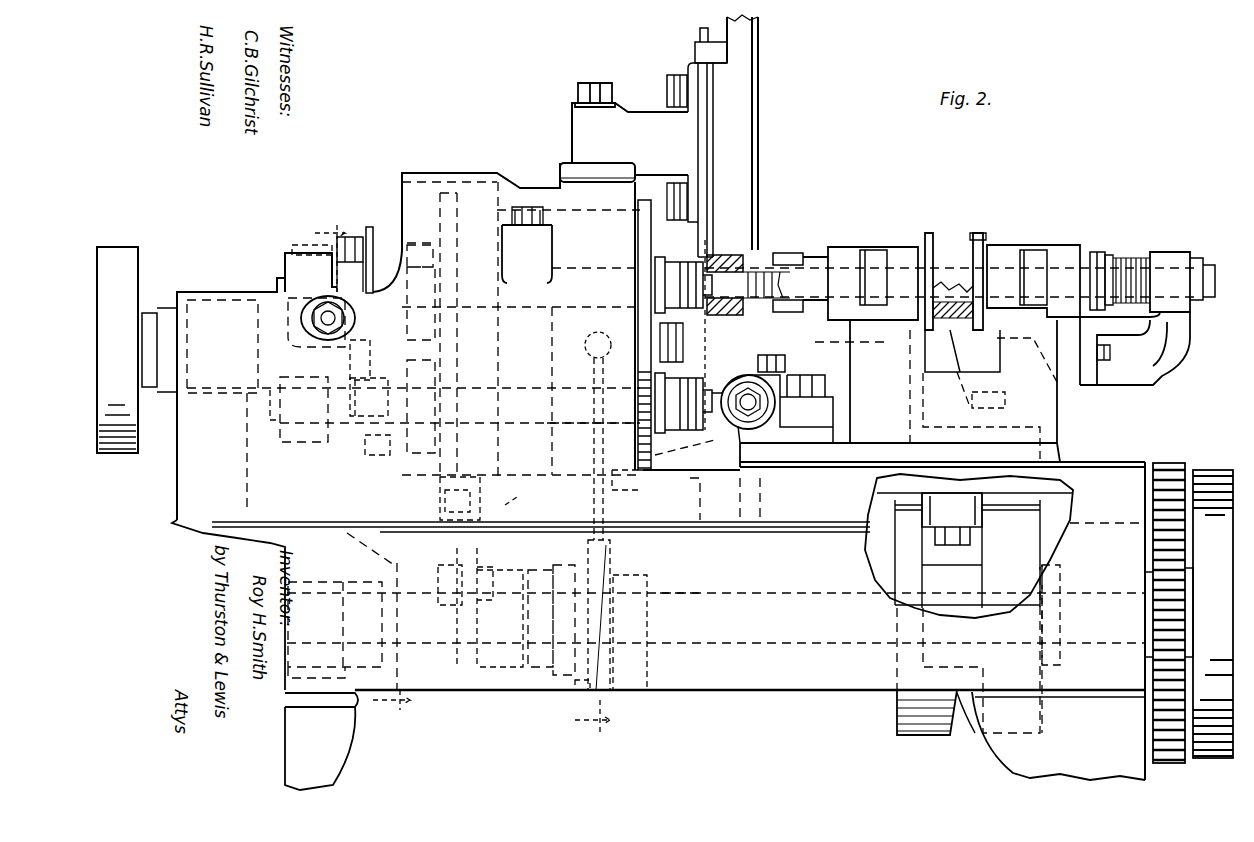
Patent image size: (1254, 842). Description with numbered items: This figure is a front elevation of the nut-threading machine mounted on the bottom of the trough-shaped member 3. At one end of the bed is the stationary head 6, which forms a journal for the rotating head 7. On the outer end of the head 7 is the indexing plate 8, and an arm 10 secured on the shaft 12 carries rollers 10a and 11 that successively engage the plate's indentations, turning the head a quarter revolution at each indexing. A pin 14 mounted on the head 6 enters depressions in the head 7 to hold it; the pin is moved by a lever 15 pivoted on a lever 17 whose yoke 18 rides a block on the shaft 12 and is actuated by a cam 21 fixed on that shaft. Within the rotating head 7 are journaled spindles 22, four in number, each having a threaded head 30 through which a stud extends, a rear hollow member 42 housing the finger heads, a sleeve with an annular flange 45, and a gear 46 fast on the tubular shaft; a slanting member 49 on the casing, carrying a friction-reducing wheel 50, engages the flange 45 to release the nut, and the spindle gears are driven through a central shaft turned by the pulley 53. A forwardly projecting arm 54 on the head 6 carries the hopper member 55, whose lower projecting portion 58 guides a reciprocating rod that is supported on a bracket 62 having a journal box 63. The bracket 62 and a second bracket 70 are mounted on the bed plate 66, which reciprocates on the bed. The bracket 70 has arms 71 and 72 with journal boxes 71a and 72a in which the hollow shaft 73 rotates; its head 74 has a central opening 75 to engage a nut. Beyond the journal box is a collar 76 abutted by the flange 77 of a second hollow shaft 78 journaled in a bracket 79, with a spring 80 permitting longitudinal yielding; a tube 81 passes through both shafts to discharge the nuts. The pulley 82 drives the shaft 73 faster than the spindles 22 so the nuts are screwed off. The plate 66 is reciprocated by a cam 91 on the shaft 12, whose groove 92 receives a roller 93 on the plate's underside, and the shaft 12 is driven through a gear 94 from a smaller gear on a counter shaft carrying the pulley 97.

The trough-shaped member 3 is at (830, 343).
The stationary head 6 is at (438, 175).
The rotating head 7 is at (423, 468).
The indexing plate 8 is at (440, 498).
The arm 10 is at (480, 558).
The roller 10a is at (445, 572).
The roller 11 is at (445, 502).
The shaft 12 is at (685, 596).
The pin 14 is at (590, 338).
The lever 15 is at (594, 464).
The lever 17 is at (612, 535).
The yoke 18 is at (640, 670).
The cam 21 is at (578, 683).
The spindles 22 is at (595, 270).
The head 30 is at (690, 340).
The hollow member 42 is at (308, 245).
The annular flange 45 is at (432, 262).
The gear 46 is at (412, 250).
The member 49 is at (372, 345).
The wheel 50 is at (372, 240).
The pulley 53 is at (137, 350).
The forwardly projecting arm 54 is at (655, 120).
The hopper member 55 is at (758, 55).
The projecting portion 58 is at (765, 250).
The bracket 62 is at (1007, 408).
The journal box 63 is at (940, 250).
The bed plate 66 is at (1066, 455).
The second bracket 70 is at (1060, 398).
The arm 71 is at (856, 345).
The journal box 71a is at (885, 250).
The arm 72 is at (1000, 340).
The journal box 72a is at (1030, 250).
The hollow shaft 73 is at (806, 262).
The head 74 is at (730, 320).
The central opening 75 is at (740, 210).
The collar 76 is at (1097, 252).
The flange 77 is at (1112, 258).
The second hollow shaft 78 is at (1188, 255).
The bracket 79 is at (1165, 372).
The spring 80 is at (1135, 260).
The tube 81 is at (1205, 265).
The pulley 82 is at (979, 233).
The cam 91 is at (898, 735).
The groove 92 is at (980, 745).
The roller 93 is at (950, 527).
The gear 94 is at (1170, 463).
The pulley 97 is at (1213, 614).